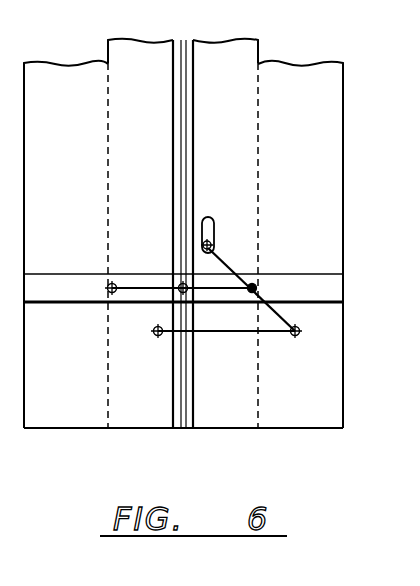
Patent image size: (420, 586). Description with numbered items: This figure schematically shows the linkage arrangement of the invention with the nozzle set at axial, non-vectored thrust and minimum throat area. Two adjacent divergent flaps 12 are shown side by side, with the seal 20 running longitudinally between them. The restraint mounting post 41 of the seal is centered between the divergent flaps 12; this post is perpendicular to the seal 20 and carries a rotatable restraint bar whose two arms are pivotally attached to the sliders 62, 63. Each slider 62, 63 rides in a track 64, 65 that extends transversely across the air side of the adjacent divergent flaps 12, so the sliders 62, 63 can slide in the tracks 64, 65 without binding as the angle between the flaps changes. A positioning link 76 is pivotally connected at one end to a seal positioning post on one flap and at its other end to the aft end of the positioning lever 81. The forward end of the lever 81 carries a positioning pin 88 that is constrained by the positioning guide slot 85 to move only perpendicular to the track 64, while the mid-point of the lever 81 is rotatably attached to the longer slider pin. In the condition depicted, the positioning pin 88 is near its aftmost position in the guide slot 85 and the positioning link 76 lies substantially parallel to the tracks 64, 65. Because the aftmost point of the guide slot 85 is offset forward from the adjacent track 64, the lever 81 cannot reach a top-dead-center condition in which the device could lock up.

The divergent flap 12 is at (70, 104).
The seal 20 is at (170, 50).
The restraint mounting post 41 is at (182, 283).
The slider 62 is at (267, 283).
The slider 63 is at (110, 283).
The track 64 is at (312, 290).
The track 65 is at (80, 290).
The positioning link 76 is at (225, 334).
The positioning lever 81 is at (233, 271).
The positioning guide slot 85 is at (214, 222).
The positioning pin 88 is at (213, 245).